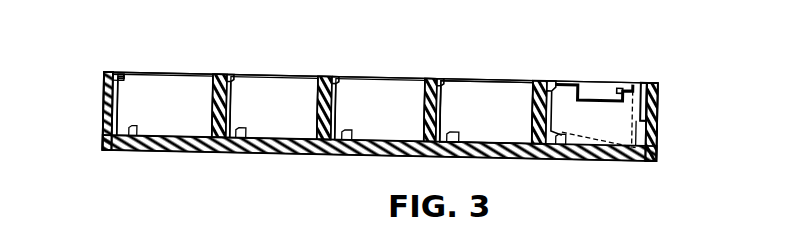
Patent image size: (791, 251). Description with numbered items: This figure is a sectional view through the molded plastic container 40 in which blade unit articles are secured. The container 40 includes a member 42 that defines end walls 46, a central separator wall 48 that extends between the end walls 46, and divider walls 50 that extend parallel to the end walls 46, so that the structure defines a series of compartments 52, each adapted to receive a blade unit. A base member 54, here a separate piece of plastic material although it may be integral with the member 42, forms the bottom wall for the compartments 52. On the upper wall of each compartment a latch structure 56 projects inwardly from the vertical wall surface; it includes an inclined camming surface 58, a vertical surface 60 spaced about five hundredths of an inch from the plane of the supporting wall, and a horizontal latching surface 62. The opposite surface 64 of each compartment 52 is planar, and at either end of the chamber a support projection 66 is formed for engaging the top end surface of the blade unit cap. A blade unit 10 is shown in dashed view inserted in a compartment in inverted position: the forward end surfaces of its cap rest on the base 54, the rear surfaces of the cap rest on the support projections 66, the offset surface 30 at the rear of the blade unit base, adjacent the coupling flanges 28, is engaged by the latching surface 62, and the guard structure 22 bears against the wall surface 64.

The blade unit article 10 is at (606, 118).
The guard surface 22 is at (658, 139).
The flanges 28 is at (620, 79).
The offset surface 30 is at (568, 75).
The container 40 is at (307, 70).
The member 42 is at (102, 121).
The end walls 46 is at (104, 98).
The central separator wall 48 is at (496, 95).
The divider walls 50 is at (217, 134).
The compartments 52 is at (179, 121).
The base member 54 is at (300, 152).
The latch structure 56 is at (117, 71).
The inclined camming surface 58 is at (124, 76).
The vertical surface 60 is at (129, 80).
The horizontal latching surface 62 is at (124, 86).
The opposite surface 64 is at (213, 90).
The support projection 66 is at (138, 135).